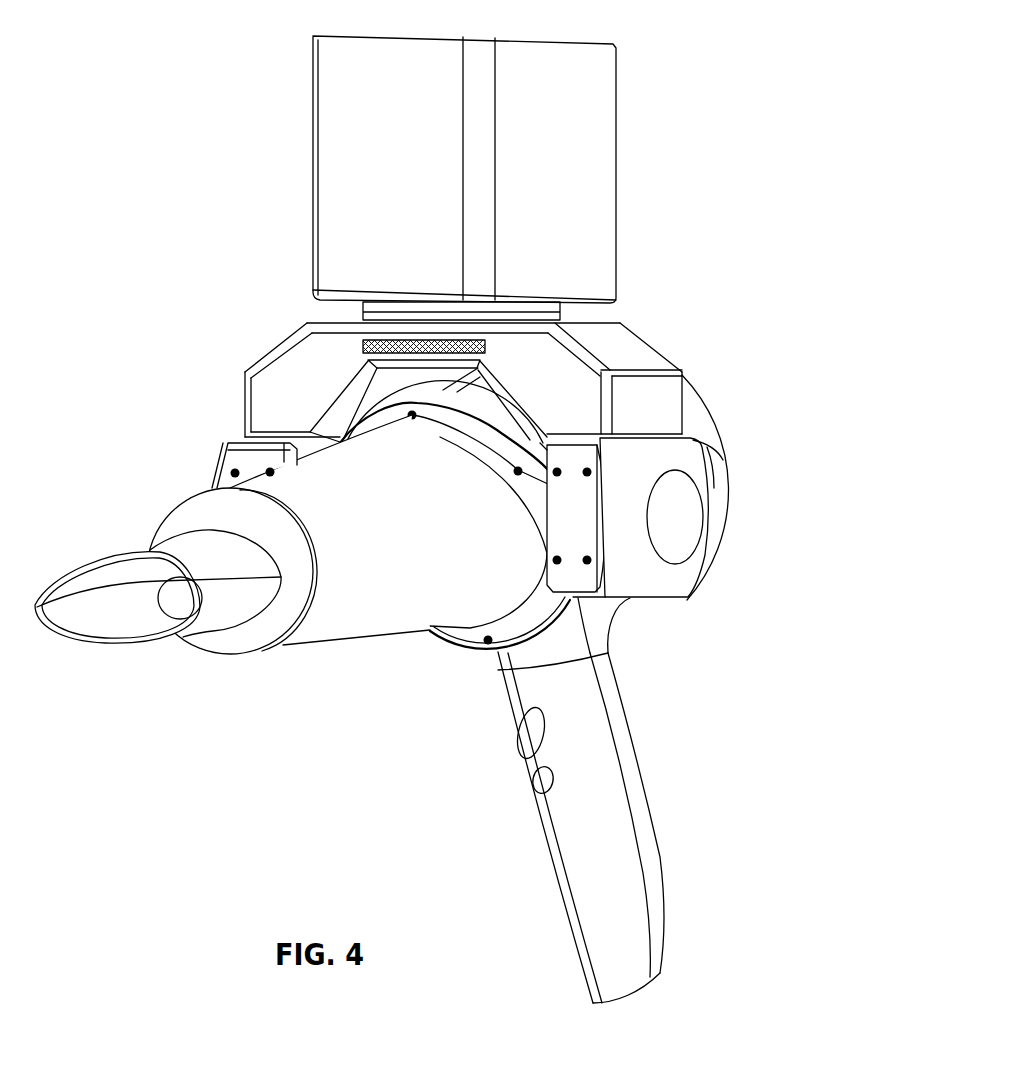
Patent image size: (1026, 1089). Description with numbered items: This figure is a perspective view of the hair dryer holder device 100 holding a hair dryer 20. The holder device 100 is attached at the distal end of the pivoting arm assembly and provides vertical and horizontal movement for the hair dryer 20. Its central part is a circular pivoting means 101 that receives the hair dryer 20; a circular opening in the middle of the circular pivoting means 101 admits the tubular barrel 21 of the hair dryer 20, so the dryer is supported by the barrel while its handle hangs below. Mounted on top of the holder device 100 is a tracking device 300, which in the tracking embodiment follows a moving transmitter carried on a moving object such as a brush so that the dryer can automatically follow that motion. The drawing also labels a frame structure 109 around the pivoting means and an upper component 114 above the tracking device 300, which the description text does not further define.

The hair dryer holder device 100 is at (216, 89).
The battery pack 114 is at (588, 86).
The tracking device 300 is at (363, 342).
The frame 109 is at (657, 397).
The circular pivoting means 101 is at (476, 637).
The tubular barrel 21 is at (392, 603).
The hair dryer 20 is at (602, 875).